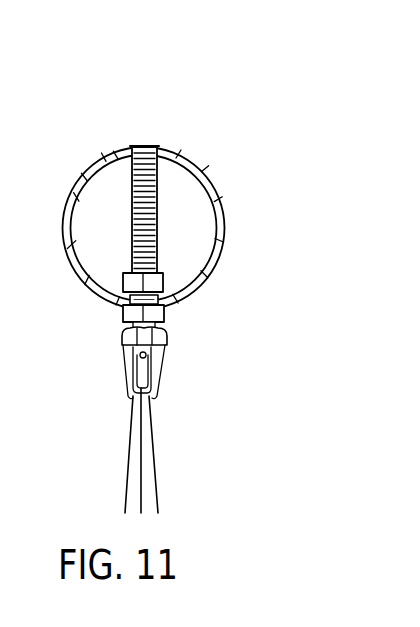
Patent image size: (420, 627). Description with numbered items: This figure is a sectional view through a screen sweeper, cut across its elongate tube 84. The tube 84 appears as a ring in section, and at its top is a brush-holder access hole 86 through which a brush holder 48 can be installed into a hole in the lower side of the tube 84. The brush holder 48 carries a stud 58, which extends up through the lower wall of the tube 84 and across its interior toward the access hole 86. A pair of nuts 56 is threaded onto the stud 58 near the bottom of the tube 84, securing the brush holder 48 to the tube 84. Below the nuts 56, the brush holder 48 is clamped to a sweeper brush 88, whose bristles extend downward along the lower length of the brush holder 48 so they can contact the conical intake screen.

The elongate tube 84 is at (210, 180).
The stud 58 is at (153, 147).
The brush-holder access hole 86 is at (130, 145).
The nuts 56 is at (164, 313).
The brush holder 48 is at (157, 362).
The sweeper brush 88 is at (157, 473).